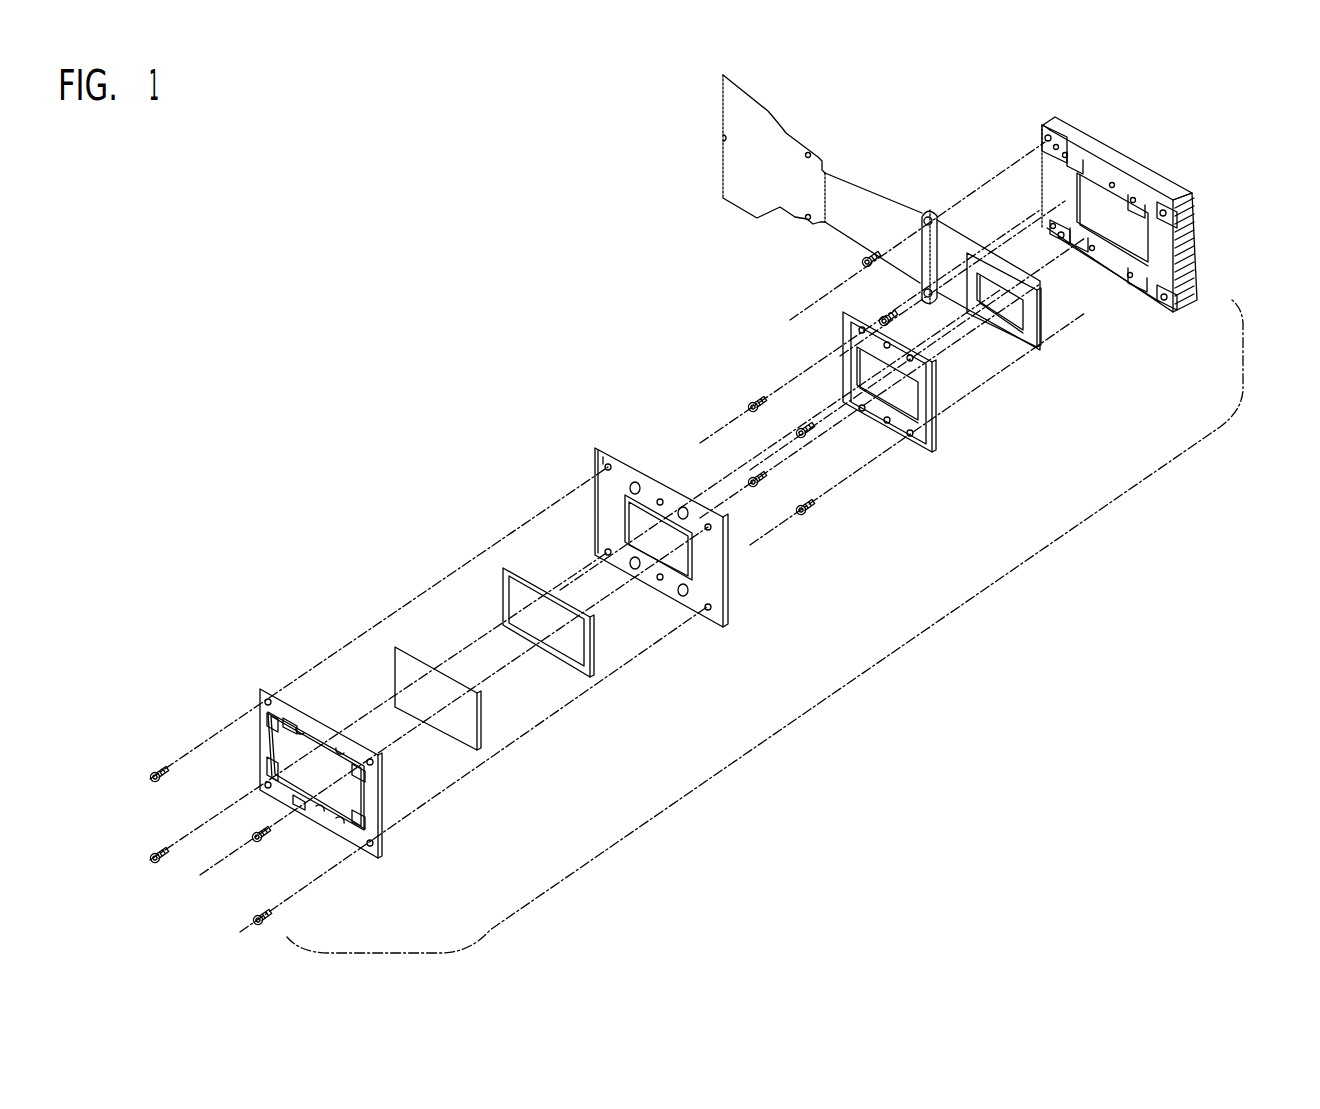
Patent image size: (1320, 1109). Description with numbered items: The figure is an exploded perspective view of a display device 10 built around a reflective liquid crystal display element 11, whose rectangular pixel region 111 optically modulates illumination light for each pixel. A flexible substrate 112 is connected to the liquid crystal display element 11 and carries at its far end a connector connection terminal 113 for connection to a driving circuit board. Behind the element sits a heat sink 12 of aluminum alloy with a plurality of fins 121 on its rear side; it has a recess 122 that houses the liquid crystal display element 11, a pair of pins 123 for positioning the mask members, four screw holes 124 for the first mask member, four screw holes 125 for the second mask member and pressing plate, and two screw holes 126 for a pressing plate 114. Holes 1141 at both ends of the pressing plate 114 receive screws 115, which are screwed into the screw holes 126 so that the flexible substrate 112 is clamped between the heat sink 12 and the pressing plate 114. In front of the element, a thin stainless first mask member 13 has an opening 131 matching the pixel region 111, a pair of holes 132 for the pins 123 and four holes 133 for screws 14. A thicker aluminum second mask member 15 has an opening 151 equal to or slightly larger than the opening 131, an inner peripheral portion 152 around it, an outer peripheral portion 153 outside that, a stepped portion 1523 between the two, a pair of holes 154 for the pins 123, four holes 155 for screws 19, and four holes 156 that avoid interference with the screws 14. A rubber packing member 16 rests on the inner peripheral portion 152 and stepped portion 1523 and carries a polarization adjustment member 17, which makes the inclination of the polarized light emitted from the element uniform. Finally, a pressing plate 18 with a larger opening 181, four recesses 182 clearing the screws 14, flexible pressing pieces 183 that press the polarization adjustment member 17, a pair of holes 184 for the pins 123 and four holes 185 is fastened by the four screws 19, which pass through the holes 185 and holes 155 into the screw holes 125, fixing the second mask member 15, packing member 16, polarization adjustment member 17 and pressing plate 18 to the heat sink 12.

The display device 10 is at (846, 686).
The liquid crystal display element 11 is at (936, 225).
The pixel region 111 is at (1043, 330).
The flexible substrate 112 is at (852, 213).
The connector connection terminal 113 is at (748, 112).
The pressing plate 114 is at (869, 178).
The holes 1141 is at (928, 214).
The screws 115 is at (863, 259).
The heat sink 12 is at (1125, 228).
The fins 121 is at (1198, 265).
The recess 122 is at (1127, 212).
The pins 123 is at (1113, 182).
The screw holes 124 is at (1088, 168).
The screw holes 125 is at (1049, 136).
The screw holes 126 is at (1052, 145).
The first mask member 13 is at (882, 439).
The opening 131 is at (925, 420).
The holes 132 is at (933, 348).
The holes 133 is at (858, 330).
The screws 14 is at (749, 403).
The second mask member 15 is at (660, 530).
The opening 151 is at (727, 587).
The inner peripheral portion 152 is at (585, 506).
The stepped portion 1523 is at (620, 520).
The outer peripheral portion 153 is at (587, 462).
The holes 154 is at (636, 482).
The holes 155 is at (608, 463).
The holes 156 is at (659, 498).
The packing member 16 is at (593, 652).
The polarization adjustment member 17 is at (480, 718).
The pressing plate 18 is at (332, 766).
The opening 181 is at (307, 726).
The recesses 182 is at (288, 723).
The pressing pieces 183 is at (265, 728).
The holes 184 is at (313, 725).
The holes 185 is at (266, 700).
The screws 19 is at (148, 779).